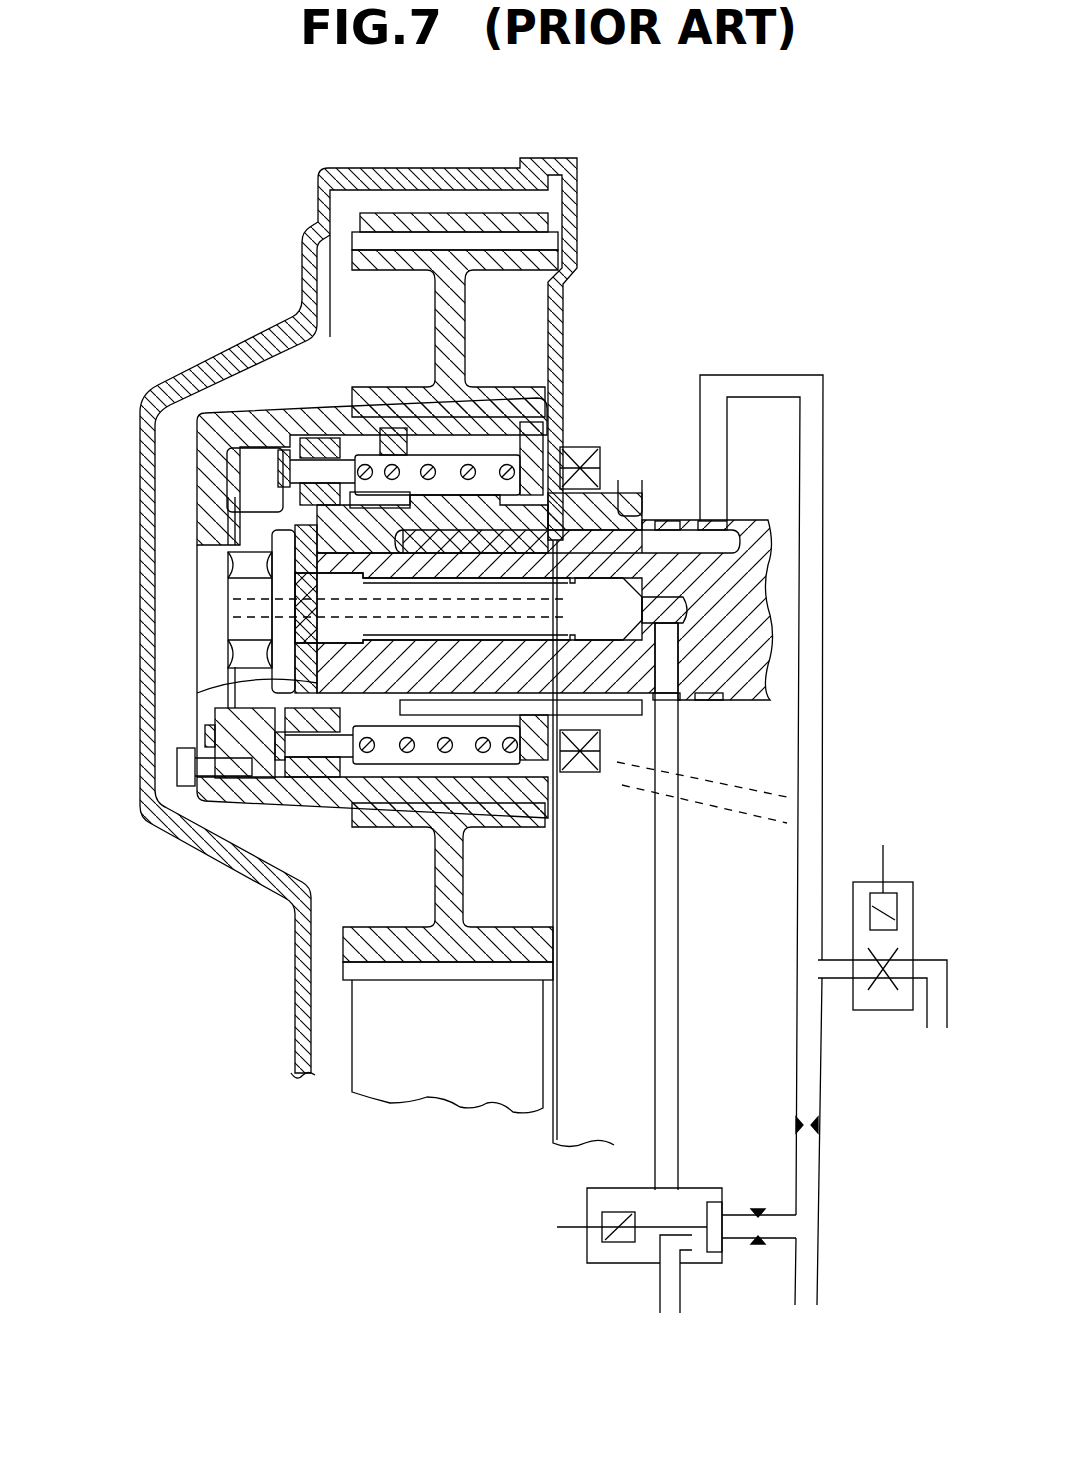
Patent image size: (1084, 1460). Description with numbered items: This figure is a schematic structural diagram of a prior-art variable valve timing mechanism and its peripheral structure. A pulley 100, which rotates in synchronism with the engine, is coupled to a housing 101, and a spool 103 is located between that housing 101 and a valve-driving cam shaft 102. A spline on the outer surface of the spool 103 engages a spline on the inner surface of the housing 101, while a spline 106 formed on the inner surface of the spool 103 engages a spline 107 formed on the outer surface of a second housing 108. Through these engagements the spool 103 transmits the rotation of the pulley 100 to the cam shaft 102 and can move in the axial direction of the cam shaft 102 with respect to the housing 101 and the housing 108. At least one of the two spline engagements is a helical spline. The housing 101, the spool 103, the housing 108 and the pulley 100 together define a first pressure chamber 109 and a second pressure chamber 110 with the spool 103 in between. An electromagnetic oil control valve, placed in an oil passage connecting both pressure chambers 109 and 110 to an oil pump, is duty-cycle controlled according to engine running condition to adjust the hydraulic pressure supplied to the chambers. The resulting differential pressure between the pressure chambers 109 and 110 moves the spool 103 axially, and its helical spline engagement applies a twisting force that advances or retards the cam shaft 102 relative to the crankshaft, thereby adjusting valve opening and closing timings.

The pulley 100 is at (445, 258).
The housing 101 is at (262, 420).
The valve-driving cam shaft 102 is at (757, 617).
The spool 103 is at (322, 762).
The spline 106 is at (325, 438).
The spline 107 is at (222, 530).
The housing 108 is at (232, 690).
The first pressure chamber 109 is at (457, 452).
The second pressure chamber 110 is at (245, 492).